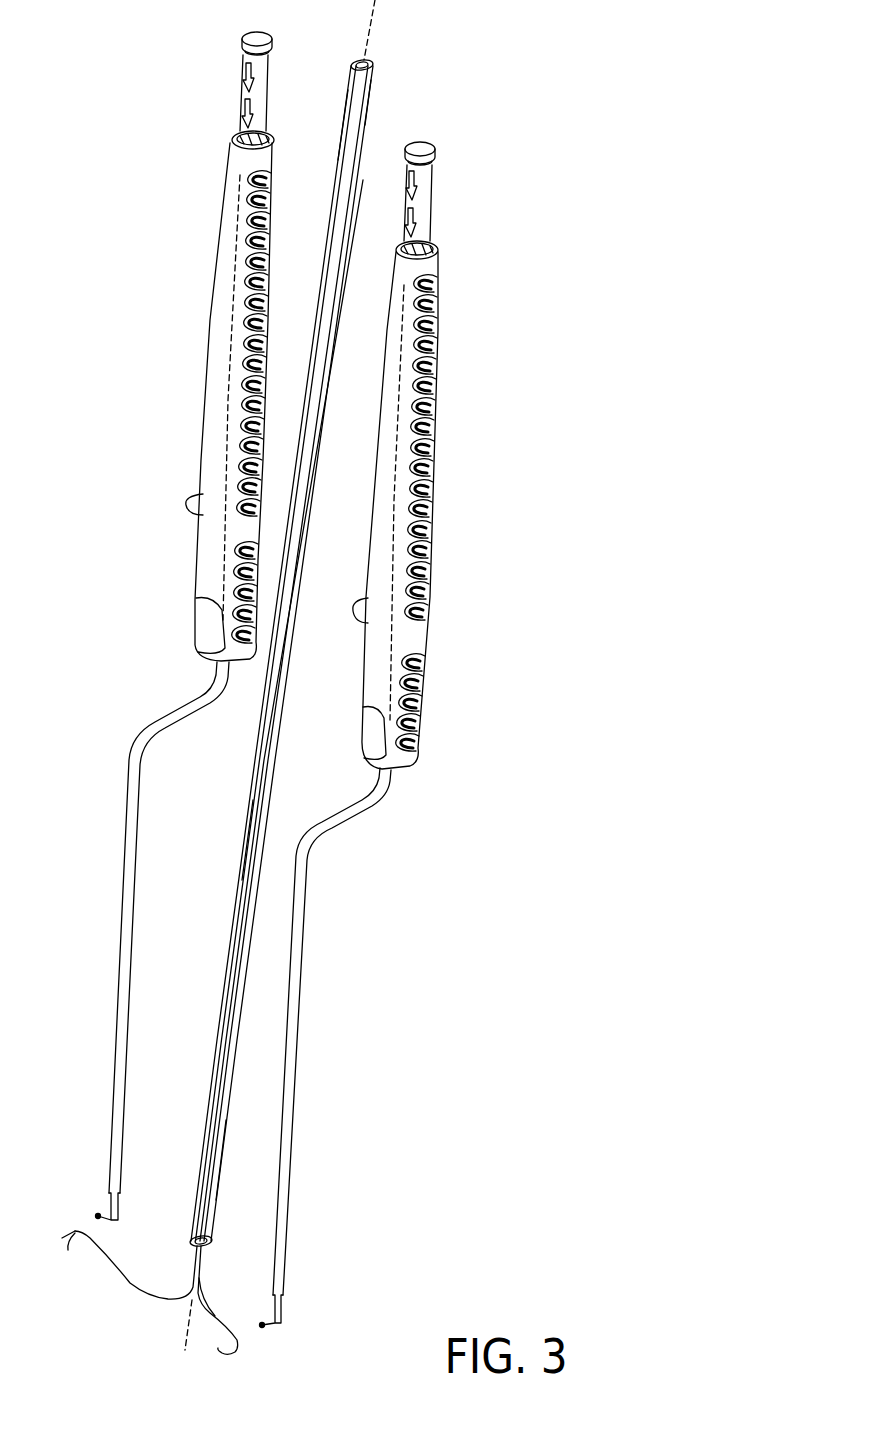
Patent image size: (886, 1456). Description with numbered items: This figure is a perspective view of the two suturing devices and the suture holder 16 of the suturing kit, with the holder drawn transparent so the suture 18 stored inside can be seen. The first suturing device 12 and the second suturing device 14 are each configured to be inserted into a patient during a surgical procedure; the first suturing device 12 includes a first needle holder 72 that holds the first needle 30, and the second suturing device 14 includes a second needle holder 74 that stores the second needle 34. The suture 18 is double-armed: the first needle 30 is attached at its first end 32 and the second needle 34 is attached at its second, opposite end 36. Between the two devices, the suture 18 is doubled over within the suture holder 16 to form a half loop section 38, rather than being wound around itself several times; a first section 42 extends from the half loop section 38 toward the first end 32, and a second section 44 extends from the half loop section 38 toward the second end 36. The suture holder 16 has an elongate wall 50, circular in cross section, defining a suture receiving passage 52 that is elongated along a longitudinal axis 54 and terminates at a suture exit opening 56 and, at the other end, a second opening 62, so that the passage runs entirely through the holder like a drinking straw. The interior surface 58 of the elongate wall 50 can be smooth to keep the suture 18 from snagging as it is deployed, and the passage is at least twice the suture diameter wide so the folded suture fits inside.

The first suturing device 12 is at (201, 416).
The second suturing device 14 is at (454, 441).
The suture holder 16 is at (220, 907).
The suture 18 is at (140, 1294).
The first needle 30 is at (68, 1250).
The first end 32 is at (75, 1232).
The second needle 34 is at (223, 1356).
The second end 36 is at (237, 1348).
The half loop section 38 is at (347, 188).
The first section 42 is at (247, 861).
The second section 44 is at (262, 815).
The elongate wall 50 is at (373, 64).
The suture receiving passage 52 is at (353, 115).
The longitudinal axis 54 is at (187, 1338).
The suture exit opening 56 is at (211, 1243).
The interior surface 58 is at (352, 63).
The second opening 62 is at (367, 62).
The first needle holder 72 is at (99, 1214).
The second needle holder 74 is at (278, 1330).